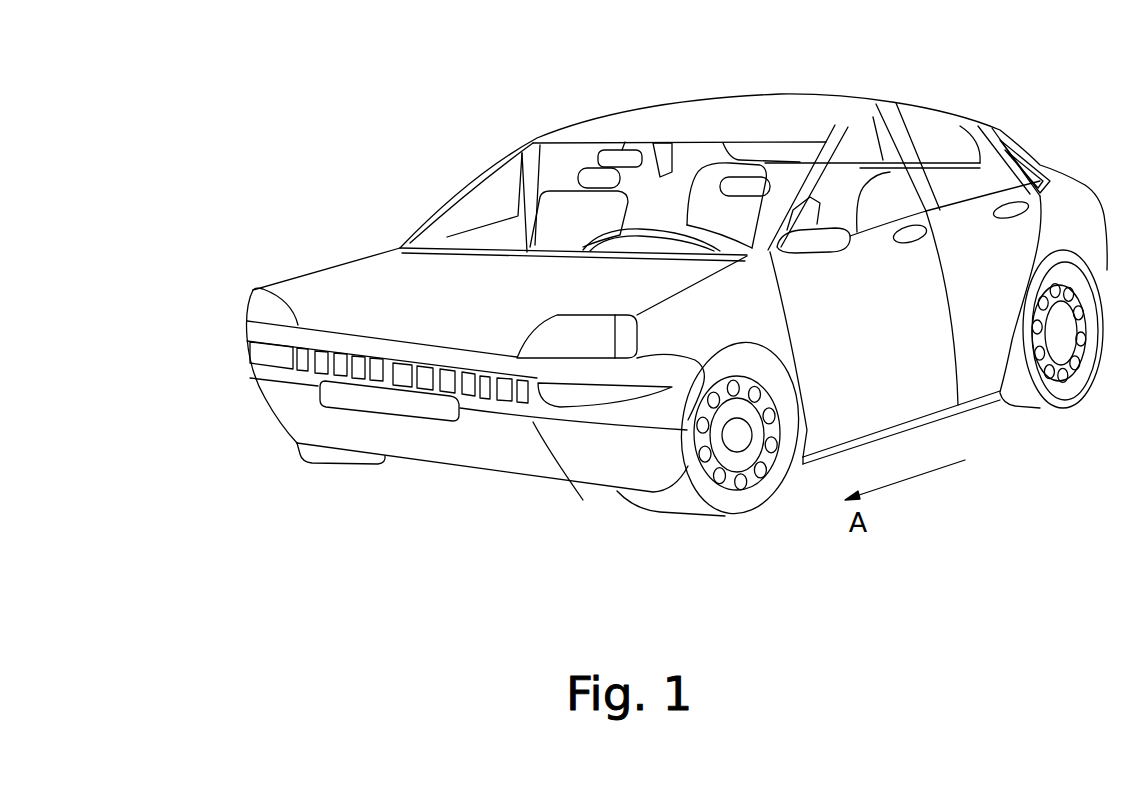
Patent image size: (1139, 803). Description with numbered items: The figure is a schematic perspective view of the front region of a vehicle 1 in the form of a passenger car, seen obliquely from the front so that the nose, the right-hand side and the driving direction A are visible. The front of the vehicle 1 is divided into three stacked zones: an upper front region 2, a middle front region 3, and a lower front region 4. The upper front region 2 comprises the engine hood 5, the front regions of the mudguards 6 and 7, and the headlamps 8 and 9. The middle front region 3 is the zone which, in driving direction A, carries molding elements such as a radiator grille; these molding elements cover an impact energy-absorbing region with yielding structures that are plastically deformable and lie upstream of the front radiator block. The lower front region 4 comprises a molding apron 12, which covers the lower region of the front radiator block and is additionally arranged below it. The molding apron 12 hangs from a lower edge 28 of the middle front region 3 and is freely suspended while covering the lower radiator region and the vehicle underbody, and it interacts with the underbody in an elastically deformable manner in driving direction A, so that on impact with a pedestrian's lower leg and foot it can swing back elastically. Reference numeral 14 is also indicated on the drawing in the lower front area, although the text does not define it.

The vehicle 1 is at (914, 83).
The upper front region 2 is at (303, 310).
The middle front region 3 is at (648, 376).
The lower front region 4 is at (497, 443).
The engine hood 5 is at (700, 274).
The mudguard 6 is at (790, 345).
The mudguard 7 is at (362, 270).
The headlamp 8 is at (553, 345).
The headlamp 9 is at (256, 308).
The molding apron 12 is at (427, 443).
The bumper lower edge 14 is at (520, 478).
The lower edge 28 is at (533, 421).